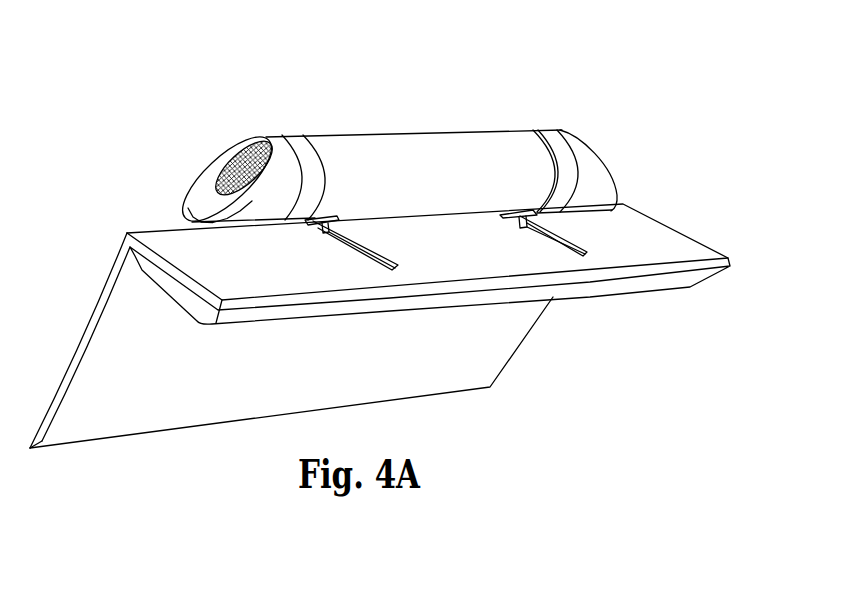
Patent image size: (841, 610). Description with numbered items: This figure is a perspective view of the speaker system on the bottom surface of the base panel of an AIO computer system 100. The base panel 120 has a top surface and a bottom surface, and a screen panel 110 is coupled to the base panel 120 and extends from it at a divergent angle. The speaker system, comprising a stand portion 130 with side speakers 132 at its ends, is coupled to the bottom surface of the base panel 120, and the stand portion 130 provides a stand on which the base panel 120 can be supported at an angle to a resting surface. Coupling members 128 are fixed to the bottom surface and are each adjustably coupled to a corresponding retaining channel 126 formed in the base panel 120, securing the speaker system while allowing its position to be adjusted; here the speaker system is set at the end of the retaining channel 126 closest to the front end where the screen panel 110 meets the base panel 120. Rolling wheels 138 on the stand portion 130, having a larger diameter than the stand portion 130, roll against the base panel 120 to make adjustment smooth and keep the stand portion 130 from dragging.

The AIO computer system 100 is at (70, 84).
The screen panel 110 is at (70, 430).
The base panel 120 is at (677, 260).
The retaining channel 126 is at (343, 248).
The coupling member 128 is at (303, 222).
The stand portion 130 is at (373, 157).
The side speakers 132 is at (210, 188).
The rolling wheel 138 is at (298, 145).